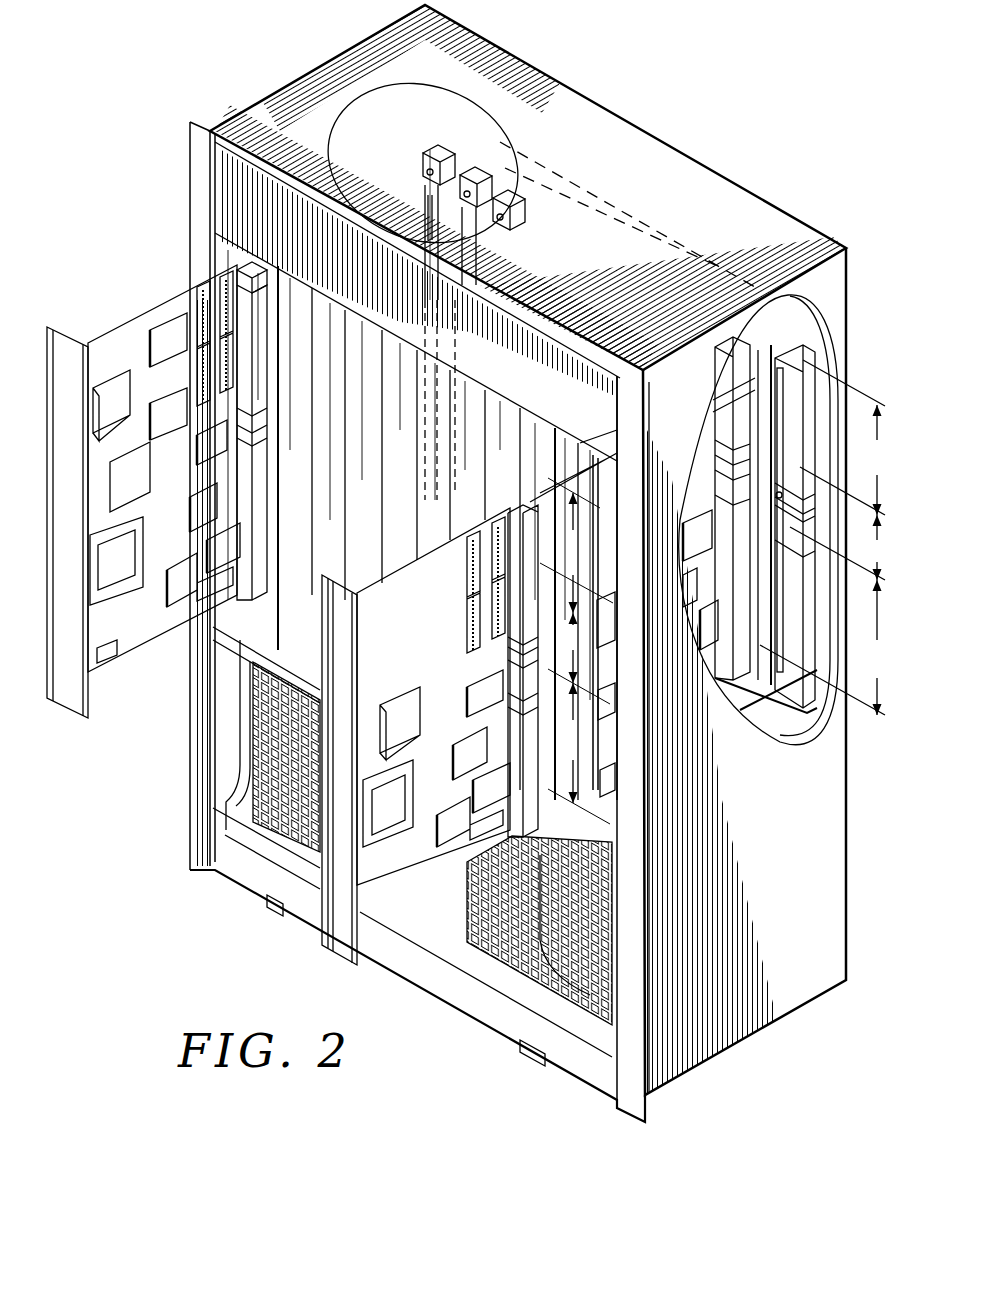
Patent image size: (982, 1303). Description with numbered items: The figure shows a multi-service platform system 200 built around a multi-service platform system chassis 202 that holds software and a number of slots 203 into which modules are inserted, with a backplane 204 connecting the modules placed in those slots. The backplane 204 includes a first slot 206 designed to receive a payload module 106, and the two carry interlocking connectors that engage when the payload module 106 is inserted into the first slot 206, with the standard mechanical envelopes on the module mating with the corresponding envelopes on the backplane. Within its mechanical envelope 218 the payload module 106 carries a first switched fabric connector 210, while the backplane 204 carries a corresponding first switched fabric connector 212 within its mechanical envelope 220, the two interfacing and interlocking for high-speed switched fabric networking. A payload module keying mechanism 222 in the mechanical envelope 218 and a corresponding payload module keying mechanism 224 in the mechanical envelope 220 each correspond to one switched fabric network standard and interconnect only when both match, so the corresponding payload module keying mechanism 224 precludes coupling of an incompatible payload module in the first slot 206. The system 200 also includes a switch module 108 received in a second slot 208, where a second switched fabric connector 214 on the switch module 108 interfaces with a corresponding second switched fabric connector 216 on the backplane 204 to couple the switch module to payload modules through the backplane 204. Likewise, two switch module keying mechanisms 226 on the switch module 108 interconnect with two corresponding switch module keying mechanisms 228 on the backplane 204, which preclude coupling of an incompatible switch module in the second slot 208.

The payload module 106 is at (430, 761).
The switch module 108 is at (157, 429).
The multi-service platform system 200 is at (509, 563).
The multi-service platform system chassis 202 is at (277, 110).
The slots 203 is at (293, 293).
The backplane 204 is at (638, 226).
The first slot 206 is at (776, 482).
The second slot 208 is at (423, 278).
The first switched fabric connector 210 is at (513, 672).
The corresponding first switched fabric connector 212 is at (773, 523).
The second switched fabric connector 214 is at (240, 317).
The corresponding second switched fabric connector 216 is at (433, 203).
The P0 mechanical envelope 218 is at (593, 657).
The J0 mechanical envelope 220 is at (872, 566).
The payload module keying mechanism 222 is at (513, 650).
The corresponding payload module keying mechanism 224 is at (777, 520).
The switch module keying mechanism 226 is at (252, 262).
The corresponding switch module keying mechanism 228 is at (433, 150).